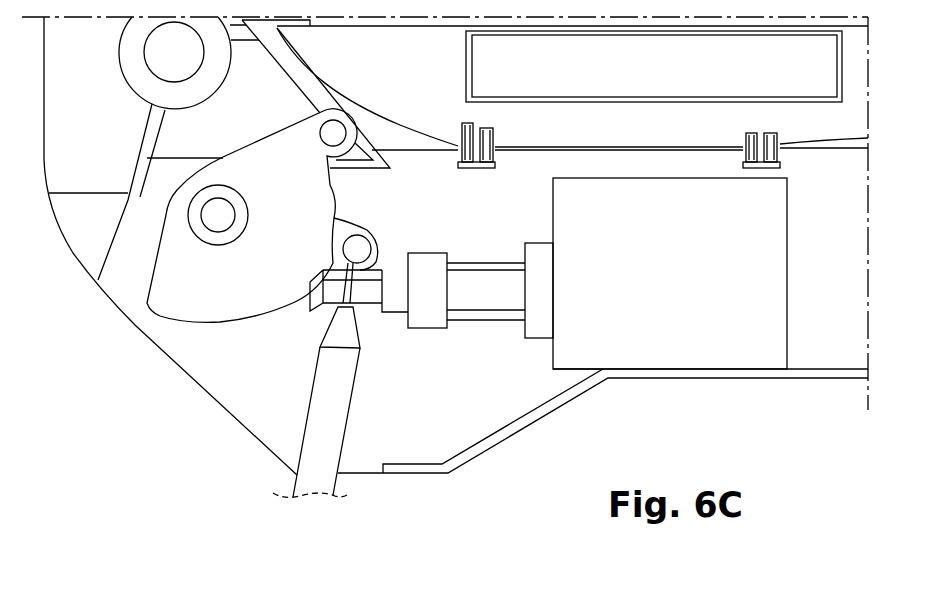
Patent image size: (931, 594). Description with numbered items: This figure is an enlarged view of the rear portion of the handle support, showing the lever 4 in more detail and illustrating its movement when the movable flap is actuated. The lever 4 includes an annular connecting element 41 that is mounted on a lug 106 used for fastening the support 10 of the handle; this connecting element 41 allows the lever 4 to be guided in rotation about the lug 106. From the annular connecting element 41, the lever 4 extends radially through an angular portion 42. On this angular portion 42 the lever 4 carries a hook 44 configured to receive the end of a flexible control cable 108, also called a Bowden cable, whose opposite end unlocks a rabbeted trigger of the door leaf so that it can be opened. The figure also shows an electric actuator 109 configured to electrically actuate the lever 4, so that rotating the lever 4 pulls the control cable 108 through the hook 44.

The lever 4 is at (155, 318).
The support 10 is at (193, 427).
The annular connecting element 41 is at (188, 214).
The angular portion 42 is at (192, 323).
The hook 44 is at (360, 249).
The lug 106 is at (218, 215).
The flexible control cable 108 is at (313, 477).
The electric actuator 109 is at (680, 330).